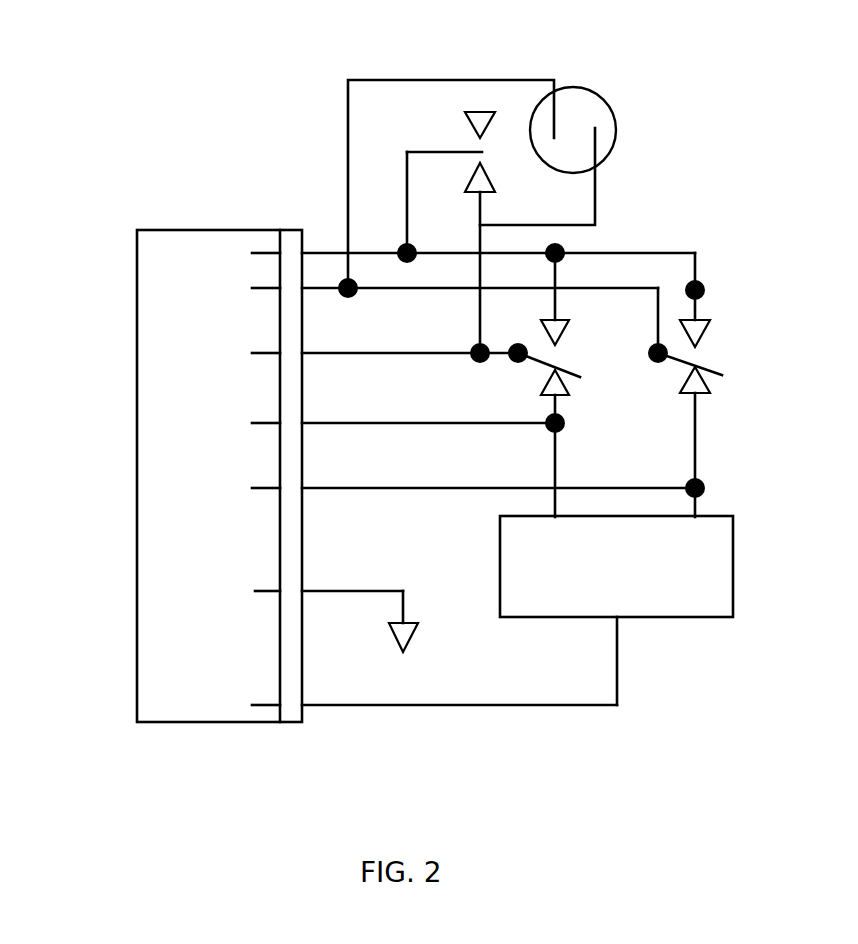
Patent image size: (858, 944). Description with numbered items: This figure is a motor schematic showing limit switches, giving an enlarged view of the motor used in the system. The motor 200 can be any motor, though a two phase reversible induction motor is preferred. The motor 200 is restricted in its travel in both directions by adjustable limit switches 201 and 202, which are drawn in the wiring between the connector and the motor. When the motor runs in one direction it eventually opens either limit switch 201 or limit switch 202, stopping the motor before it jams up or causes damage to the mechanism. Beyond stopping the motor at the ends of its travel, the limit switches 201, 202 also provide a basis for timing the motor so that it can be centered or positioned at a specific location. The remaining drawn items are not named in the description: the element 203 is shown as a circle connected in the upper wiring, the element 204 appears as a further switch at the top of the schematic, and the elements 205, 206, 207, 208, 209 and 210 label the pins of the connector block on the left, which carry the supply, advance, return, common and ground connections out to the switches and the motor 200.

The motor 200 is at (733, 565).
The limit switch 201 is at (718, 372).
The limit switch 202 is at (572, 370).
The sensor / indicator 203 is at (617, 128).
The top switch 204 is at (490, 150).
The 110 pin 205 is at (187, 250).
The ADV pin 206 is at (187, 282).
The RET pin 207 is at (187, 348).
The C pin 208 is at (212, 422).
The C pin 209 is at (212, 490).
The 110 GND pin 210 is at (137, 702).